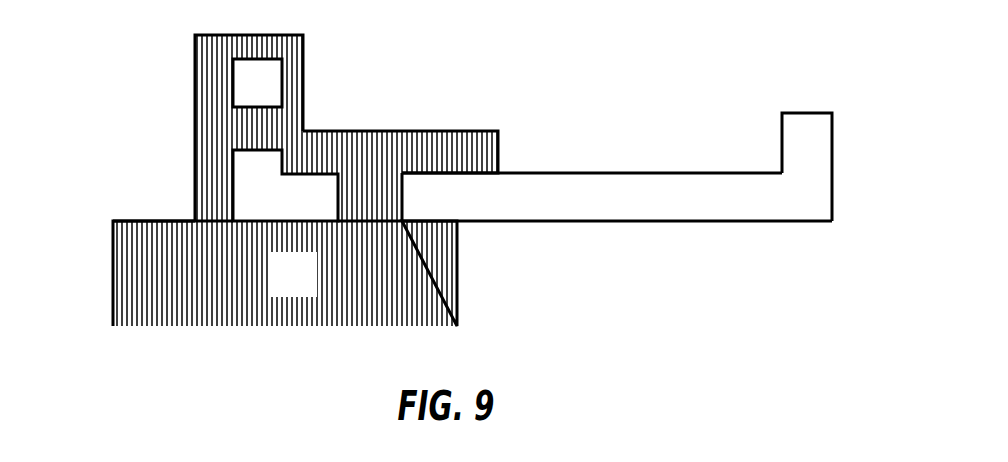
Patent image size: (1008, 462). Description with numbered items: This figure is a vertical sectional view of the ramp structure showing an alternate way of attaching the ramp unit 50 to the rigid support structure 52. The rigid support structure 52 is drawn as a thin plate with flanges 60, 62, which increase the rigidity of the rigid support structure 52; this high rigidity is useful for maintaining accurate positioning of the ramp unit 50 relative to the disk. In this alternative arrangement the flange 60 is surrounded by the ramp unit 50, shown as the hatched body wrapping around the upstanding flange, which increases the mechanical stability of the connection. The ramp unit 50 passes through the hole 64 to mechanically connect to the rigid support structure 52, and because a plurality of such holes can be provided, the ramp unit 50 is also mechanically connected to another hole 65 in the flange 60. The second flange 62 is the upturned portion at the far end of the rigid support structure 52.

The ramp unit 50 is at (276, 289).
The rigid support structure 52 is at (598, 214).
The flange 60 is at (257, 91).
The flange 62 is at (818, 150).
The hole 64 is at (373, 170).
The hole 65 is at (182, 133).